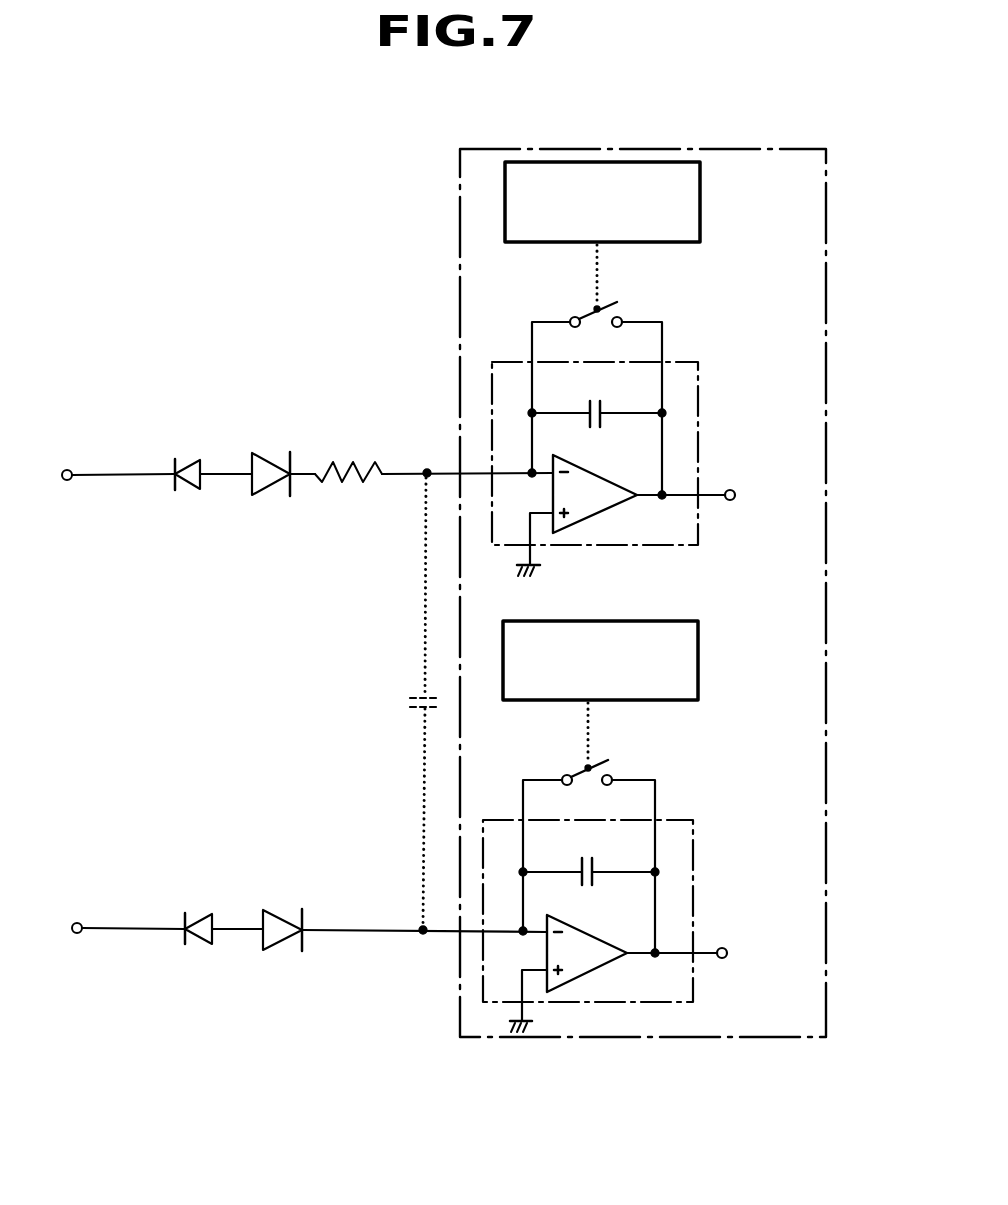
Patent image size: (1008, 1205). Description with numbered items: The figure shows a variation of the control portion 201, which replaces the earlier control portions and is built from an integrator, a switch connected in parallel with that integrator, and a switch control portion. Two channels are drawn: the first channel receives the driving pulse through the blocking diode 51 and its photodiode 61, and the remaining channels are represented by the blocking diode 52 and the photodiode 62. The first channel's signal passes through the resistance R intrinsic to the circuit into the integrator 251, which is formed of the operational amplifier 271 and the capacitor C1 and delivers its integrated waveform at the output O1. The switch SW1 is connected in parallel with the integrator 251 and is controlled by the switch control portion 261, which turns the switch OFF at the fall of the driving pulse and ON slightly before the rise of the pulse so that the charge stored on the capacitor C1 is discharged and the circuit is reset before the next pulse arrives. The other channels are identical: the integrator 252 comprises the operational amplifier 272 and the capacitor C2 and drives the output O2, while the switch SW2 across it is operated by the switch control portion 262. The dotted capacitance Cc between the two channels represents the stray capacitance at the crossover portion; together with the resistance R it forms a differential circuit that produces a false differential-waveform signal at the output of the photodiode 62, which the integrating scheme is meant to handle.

The control portion 201 is at (826, 190).
The blocking diode 51 is at (191, 456).
The blocking diode 52 is at (190, 909).
The photodiode 61 is at (272, 459).
The photodiode 62 is at (275, 912).
The resistance R is at (348, 456).
The capacitance Cc is at (404, 702).
The switch control portion 261 is at (631, 201).
The switch control portion 262 is at (624, 645).
The switch SW1 is at (617, 302).
The switch SW2 is at (608, 760).
The integrator 251 is at (621, 455).
The integrator 252 is at (633, 913).
The capacitor C1 is at (597, 397).
The capacitor C2 is at (589, 856).
The operational amplifier 271 is at (598, 489).
The operational amplifier 272 is at (597, 943).
The output O1 is at (705, 498).
The output O2 is at (714, 955).